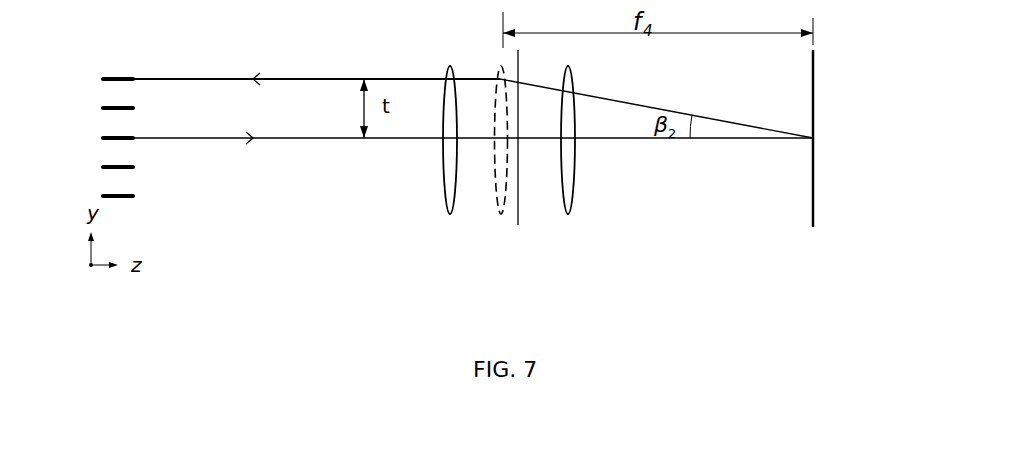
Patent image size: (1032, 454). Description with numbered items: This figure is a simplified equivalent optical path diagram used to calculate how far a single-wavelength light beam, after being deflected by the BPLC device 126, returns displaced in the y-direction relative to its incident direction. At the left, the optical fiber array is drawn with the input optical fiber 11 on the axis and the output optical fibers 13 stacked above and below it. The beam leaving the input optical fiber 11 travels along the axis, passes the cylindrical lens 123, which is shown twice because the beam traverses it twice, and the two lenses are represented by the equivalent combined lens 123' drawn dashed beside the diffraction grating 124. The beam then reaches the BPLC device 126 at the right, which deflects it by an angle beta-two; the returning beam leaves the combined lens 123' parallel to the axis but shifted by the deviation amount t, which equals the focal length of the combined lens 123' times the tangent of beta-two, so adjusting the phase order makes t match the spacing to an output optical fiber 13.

The input optical fiber 11 is at (445, 152).
The output optical fiber 13 is at (301, 65).
The cylindrical lens 123 is at (508, 151).
The combined lens 123' is at (482, 154).
The diffraction grating 124 is at (539, 150).
The BPLC device 126 is at (838, 138).